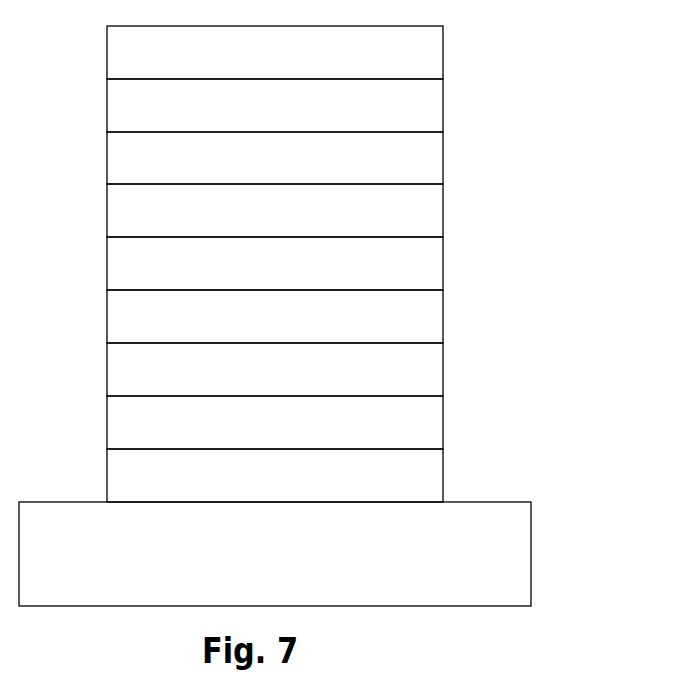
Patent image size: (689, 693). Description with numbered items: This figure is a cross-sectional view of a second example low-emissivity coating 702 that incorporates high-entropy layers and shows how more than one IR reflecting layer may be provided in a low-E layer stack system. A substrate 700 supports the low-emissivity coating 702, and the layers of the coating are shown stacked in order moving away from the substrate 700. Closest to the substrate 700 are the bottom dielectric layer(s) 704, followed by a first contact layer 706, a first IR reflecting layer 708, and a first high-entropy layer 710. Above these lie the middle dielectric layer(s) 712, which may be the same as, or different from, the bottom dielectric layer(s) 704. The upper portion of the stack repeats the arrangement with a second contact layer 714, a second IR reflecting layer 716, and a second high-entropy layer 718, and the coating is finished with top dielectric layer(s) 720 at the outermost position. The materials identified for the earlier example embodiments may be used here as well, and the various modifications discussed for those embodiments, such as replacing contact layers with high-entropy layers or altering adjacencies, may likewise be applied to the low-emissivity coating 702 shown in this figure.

The substrate 700 is at (531, 554).
The low-emissivity coating 702 is at (88, 24).
The bottom dielectric layer(s) 704 is at (443, 475).
The first contact layer 706 is at (443, 423).
The first IR reflecting layer 708 is at (443, 370).
The first high-entropy layer 710 is at (443, 317).
The middle dielectric layer(s) 712 is at (443, 264).
The second contact layer 714 is at (443, 211).
The second IR reflecting layer 716 is at (443, 159).
The second high-entropy layer 718 is at (443, 107).
The top dielectric layer(s) 720 is at (443, 53).